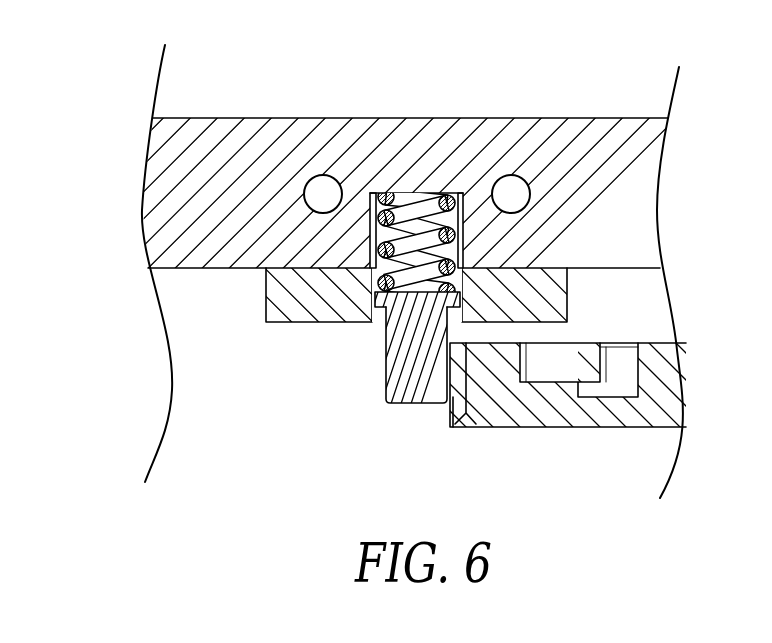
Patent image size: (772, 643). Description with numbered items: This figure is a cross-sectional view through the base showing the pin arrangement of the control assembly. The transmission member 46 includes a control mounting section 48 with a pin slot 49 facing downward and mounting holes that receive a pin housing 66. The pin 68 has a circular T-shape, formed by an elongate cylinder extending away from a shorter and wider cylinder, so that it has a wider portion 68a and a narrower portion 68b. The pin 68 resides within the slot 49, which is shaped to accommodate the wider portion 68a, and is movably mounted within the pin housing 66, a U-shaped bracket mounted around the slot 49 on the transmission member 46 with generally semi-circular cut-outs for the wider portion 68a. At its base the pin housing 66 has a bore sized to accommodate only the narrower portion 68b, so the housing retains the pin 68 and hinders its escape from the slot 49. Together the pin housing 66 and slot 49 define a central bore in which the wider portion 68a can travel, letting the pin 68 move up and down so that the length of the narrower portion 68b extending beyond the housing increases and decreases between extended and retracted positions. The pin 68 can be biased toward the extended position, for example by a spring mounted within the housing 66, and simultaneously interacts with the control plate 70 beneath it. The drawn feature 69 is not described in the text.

The transmission member 46 is at (172, 158).
The control mounting section 48 is at (505, 245).
The pin slot 49 is at (424, 198).
The pin housing 66 is at (287, 297).
The pin 68 is at (505, 382).
The wider portion 68a is at (443, 295).
The narrower portion 68b is at (412, 373).
The spring housing sleeve 69 is at (378, 278).
The control plate 70 is at (532, 402).